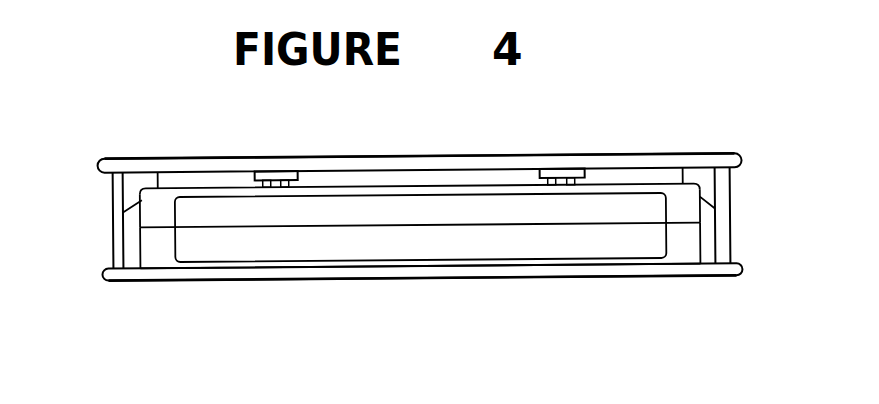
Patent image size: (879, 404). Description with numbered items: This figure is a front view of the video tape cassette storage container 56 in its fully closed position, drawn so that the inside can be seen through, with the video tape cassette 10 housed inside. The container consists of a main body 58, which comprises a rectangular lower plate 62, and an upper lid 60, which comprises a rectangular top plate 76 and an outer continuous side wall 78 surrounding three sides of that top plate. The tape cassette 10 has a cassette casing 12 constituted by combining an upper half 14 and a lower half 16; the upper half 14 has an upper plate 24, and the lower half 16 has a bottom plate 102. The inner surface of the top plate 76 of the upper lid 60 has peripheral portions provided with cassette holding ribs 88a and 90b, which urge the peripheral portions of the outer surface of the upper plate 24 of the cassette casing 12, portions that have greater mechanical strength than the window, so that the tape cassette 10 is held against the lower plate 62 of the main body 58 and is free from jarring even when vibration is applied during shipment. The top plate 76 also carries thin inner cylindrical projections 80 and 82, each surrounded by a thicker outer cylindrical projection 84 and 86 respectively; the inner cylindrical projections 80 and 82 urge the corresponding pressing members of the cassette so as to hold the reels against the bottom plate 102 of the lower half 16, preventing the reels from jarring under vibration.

The video tape cassette storage container 56 is at (193, 126).
The top plate 76 is at (453, 160).
The upper lid 60 is at (524, 148).
The lower plate 62 is at (432, 270).
The main body 58 is at (522, 284).
The outer continuous side wall 78 is at (118, 240).
The cassette holding rib 88a is at (135, 183).
The cassette holding rib 90b is at (707, 182).
The outer cylindrical projection 84 is at (253, 175).
The inner cylindrical projection 80 is at (280, 180).
The outer cylindrical projection 86 is at (587, 173).
The inner cylindrical projection 82 is at (562, 177).
The upper plate 24 is at (386, 190).
The upper half 14 is at (158, 217).
The lower half 16 is at (168, 247).
The cassette casing 12 is at (243, 333).
The bottom plate 102 is at (360, 265).
The video tape cassette 10 is at (607, 235).